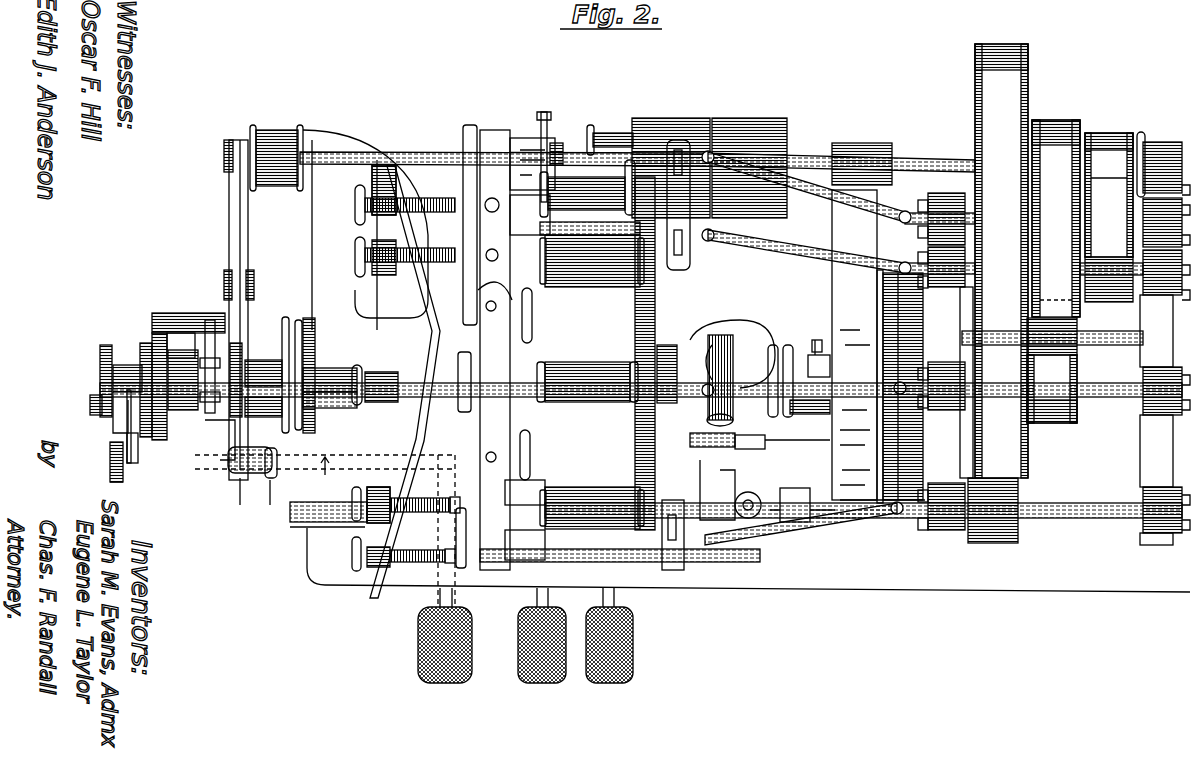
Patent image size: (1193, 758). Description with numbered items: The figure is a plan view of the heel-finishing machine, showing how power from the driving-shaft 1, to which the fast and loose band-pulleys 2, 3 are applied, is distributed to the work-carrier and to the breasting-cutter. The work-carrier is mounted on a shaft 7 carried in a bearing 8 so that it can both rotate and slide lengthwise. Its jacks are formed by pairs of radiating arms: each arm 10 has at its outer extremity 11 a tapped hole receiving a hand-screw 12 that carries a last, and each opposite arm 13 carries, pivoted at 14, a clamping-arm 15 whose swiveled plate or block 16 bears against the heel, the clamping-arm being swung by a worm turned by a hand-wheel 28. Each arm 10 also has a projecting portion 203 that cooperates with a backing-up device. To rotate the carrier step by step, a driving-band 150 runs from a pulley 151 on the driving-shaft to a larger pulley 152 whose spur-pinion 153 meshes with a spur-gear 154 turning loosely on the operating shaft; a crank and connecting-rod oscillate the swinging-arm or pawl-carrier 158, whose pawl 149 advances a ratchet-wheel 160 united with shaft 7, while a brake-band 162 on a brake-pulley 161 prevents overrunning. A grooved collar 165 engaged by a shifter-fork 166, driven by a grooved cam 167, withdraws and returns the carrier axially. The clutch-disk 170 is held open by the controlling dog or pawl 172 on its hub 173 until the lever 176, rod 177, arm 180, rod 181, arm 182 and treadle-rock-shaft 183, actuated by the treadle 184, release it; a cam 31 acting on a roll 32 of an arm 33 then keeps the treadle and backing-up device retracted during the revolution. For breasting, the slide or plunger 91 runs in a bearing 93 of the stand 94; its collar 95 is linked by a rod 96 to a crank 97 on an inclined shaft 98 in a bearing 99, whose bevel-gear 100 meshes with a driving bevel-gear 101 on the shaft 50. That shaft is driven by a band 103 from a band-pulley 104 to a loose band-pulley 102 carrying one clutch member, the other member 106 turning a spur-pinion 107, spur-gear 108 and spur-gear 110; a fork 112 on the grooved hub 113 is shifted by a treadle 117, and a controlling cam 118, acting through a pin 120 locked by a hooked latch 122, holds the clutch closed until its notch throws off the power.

The driving-shaft 1 is at (428, 160).
The fast band-pulley 2 is at (658, 117).
The loose band-pulley 3 is at (738, 117).
The work-carrier shaft 7 is at (325, 368).
The bearing 8 is at (262, 358).
The arm 10 is at (392, 234).
The outer extremity of arm 11 is at (386, 168).
The hand-screw 12 is at (355, 192).
The arm 13 is at (495, 350).
The pivot 14 is at (486, 308).
The clamping-arm 15 is at (498, 206).
The plate or block 16 is at (472, 165).
The hand-wheel 28 is at (534, 312).
The cam 31 is at (98, 345).
The roll 32 is at (110, 410).
The arm 33 is at (88, 398).
The shaft 50 is at (722, 322).
The slide or plunger 91 is at (722, 525).
The bearing 93 is at (688, 540).
The stand 94 is at (634, 458).
The collar 95 is at (852, 520).
The rod 96 is at (792, 522).
The crank 97 is at (782, 440).
The inclined shaft 98 is at (746, 520).
The bearing 99 is at (735, 360).
The bevel-gear 100 is at (712, 372).
The driving bevel-gear 101 is at (786, 343).
The loose band-pulley 102 is at (832, 285).
The band 103 is at (835, 214).
The band-pulley 104 is at (838, 142).
The friction-clutch member 106 is at (910, 250).
The spur-pinion 107 is at (928, 428).
The spur-gear 108 is at (900, 455).
The spur-gear 110 is at (935, 310).
The fork 112 is at (812, 352).
The grooved hub 113 is at (824, 352).
The treadle 117 is at (532, 686).
The controlling cam 118 is at (772, 343).
The pin 120 is at (786, 420).
The hooked latch 122 is at (812, 414).
The pawl 149 is at (285, 315).
The driving-band 150 is at (228, 220).
The pulley 151 is at (224, 148).
The pulley 152 is at (224, 286).
The spur-pinion 153 is at (152, 310).
The spur-gear 154 is at (160, 440).
The swinging-arm or pawl-carrier 158 is at (298, 320).
The ratchet-wheel 160 is at (308, 395).
The brake-pulley 161 is at (264, 476).
The brake-band 162 is at (242, 340).
The grooved collar 165 is at (206, 416).
The shifter-fork 166 is at (215, 460).
The grooved cam 167 is at (168, 335).
The clutch-disk 170 is at (145, 343).
The controlling dog or pawl 172 is at (128, 428).
The hub 173 is at (140, 464).
The lever 176 is at (108, 465).
The rod 177 is at (108, 480).
The arm 180 is at (240, 470).
The rod 181 is at (245, 480).
The arm 182 is at (275, 482).
The treadle-rock-shaft 183 is at (332, 472).
The treadle 184 is at (446, 686).
The projecting portion 203 is at (390, 168).